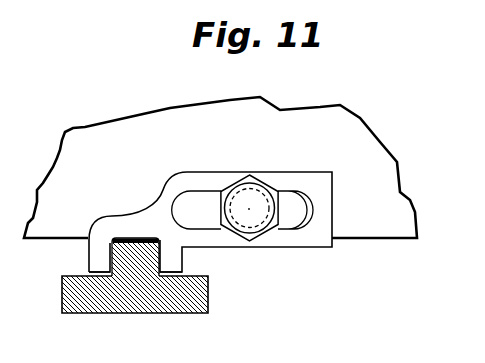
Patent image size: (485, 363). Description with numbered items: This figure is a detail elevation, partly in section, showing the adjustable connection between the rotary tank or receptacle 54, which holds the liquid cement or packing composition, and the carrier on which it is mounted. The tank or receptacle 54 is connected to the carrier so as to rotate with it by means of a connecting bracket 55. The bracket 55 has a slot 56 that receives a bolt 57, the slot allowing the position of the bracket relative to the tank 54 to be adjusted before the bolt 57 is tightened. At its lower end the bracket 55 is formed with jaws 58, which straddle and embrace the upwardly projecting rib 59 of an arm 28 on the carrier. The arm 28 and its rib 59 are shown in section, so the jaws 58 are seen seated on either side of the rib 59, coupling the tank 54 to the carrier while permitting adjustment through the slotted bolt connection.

The tank or receptacle 54 is at (220, 167).
The connecting bracket 55 is at (163, 198).
The slot 56 is at (200, 226).
The bolt 57 is at (257, 193).
The jaws 58 is at (88, 252).
The rib 59 is at (128, 252).
The arm 28 is at (135, 307).